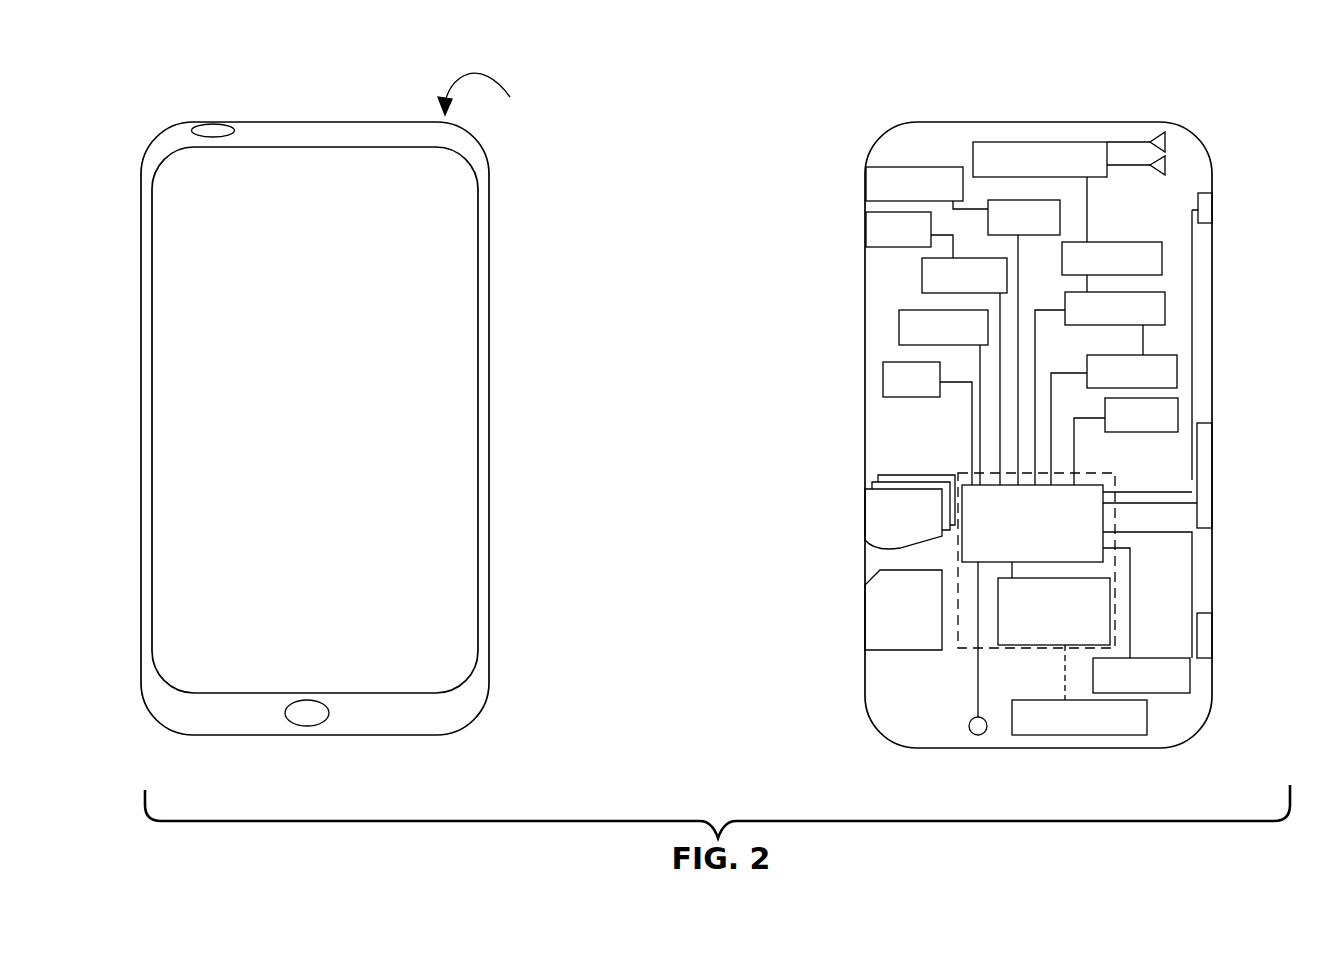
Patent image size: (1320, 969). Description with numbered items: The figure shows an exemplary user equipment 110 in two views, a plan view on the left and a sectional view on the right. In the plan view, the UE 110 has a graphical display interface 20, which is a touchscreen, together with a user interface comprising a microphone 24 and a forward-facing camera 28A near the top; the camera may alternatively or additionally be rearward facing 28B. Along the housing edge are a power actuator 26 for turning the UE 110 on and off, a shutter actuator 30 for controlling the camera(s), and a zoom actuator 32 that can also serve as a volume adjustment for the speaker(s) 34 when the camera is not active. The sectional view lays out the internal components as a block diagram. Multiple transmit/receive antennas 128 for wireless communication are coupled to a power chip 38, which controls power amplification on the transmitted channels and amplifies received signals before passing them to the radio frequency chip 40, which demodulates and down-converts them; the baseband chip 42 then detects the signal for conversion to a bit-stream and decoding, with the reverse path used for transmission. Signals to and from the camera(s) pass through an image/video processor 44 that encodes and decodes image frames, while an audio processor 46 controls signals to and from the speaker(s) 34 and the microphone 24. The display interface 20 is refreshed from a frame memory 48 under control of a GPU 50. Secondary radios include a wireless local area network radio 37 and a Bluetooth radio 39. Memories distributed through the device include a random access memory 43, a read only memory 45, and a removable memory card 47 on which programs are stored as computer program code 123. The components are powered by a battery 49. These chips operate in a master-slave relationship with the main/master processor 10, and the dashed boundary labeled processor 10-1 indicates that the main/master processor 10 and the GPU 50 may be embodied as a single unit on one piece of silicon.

The graphical display interface 20 is at (168, 340).
The microphone 24 is at (314, 717).
The power actuator 26 is at (1208, 207).
The camera 28A is at (212, 123).
The rearward facing camera 28B is at (493, 97).
The shutter actuator 30 is at (1212, 627).
The zoom actuator 32 is at (1212, 462).
The speaker 34 is at (866, 222).
The wireless local area network radio 37 is at (899, 325).
The power chip 38 is at (1013, 142).
The Bluetooth radio 39 is at (883, 382).
The radio frequency chip 40 is at (1162, 250).
The baseband chip 42 is at (1165, 305).
The random access memory 43 is at (1177, 363).
The image/video processor 44 is at (1053, 218).
The read only memory 45 is at (1178, 408).
The audio processor 46 is at (922, 278).
The memory card 47 is at (883, 592).
The frame memory 48 is at (1075, 735).
The battery 49 is at (1178, 693).
The GPU 50 is at (998, 643).
The main/master processor 10 is at (956, 476).
The processor 10-1 is at (1118, 480).
The user equipment 110 is at (487, 748).
The computer program code 123 is at (877, 525).
The transmit/receive antennas 128 is at (1163, 130).